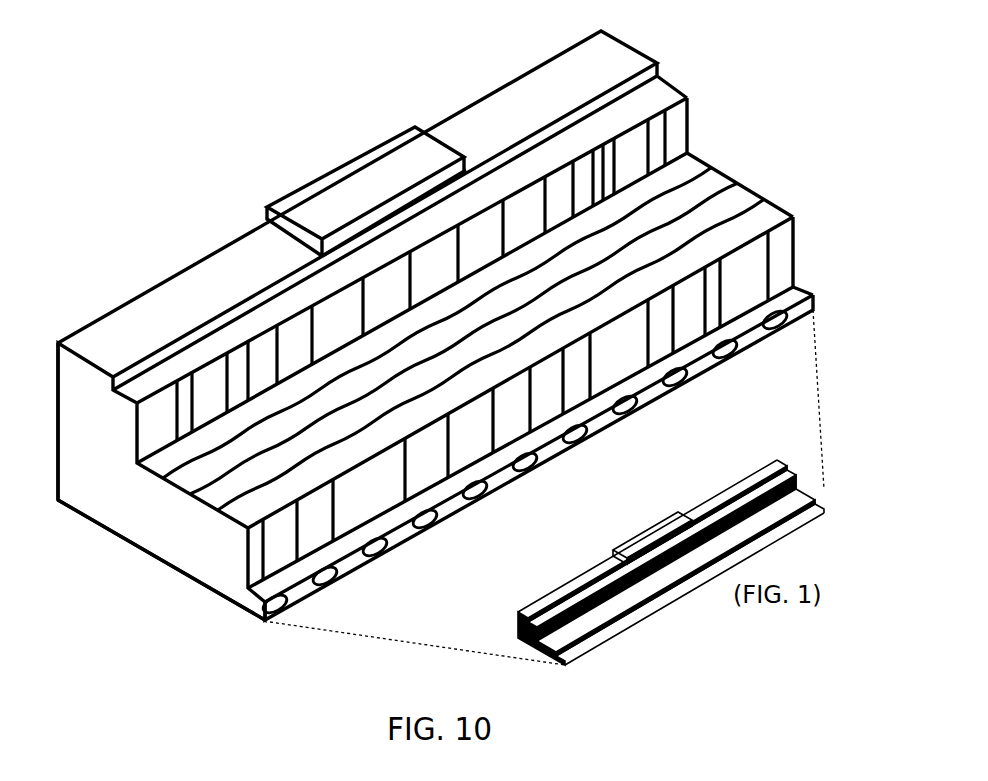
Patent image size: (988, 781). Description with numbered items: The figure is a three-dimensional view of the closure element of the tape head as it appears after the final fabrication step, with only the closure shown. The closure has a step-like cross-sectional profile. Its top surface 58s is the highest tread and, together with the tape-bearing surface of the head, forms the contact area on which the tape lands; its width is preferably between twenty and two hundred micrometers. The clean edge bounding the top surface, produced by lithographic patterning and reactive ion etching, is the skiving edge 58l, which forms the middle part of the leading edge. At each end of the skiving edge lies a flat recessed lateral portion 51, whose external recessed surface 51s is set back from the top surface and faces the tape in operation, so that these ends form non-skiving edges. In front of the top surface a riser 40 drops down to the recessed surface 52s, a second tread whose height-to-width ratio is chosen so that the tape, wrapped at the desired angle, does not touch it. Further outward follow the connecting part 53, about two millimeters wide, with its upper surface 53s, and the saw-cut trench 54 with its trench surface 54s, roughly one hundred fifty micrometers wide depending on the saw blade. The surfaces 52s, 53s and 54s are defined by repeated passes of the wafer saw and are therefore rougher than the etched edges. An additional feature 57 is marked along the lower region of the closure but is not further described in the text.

The riser 40 is at (161, 462).
The recessed lateral portion 51 is at (72, 424).
The connecting part 53 is at (148, 532).
The trench 54 is at (262, 612).
The recessed surface of lateral portion 51s is at (547, 78).
The recessed surface 52s is at (653, 92).
The upper surface of connecting part 53s is at (740, 204).
The trench surface 54s is at (788, 292).
The bumps 57 is at (728, 360).
The top surface 58s is at (383, 153).
The skiving edge 58l is at (423, 177).